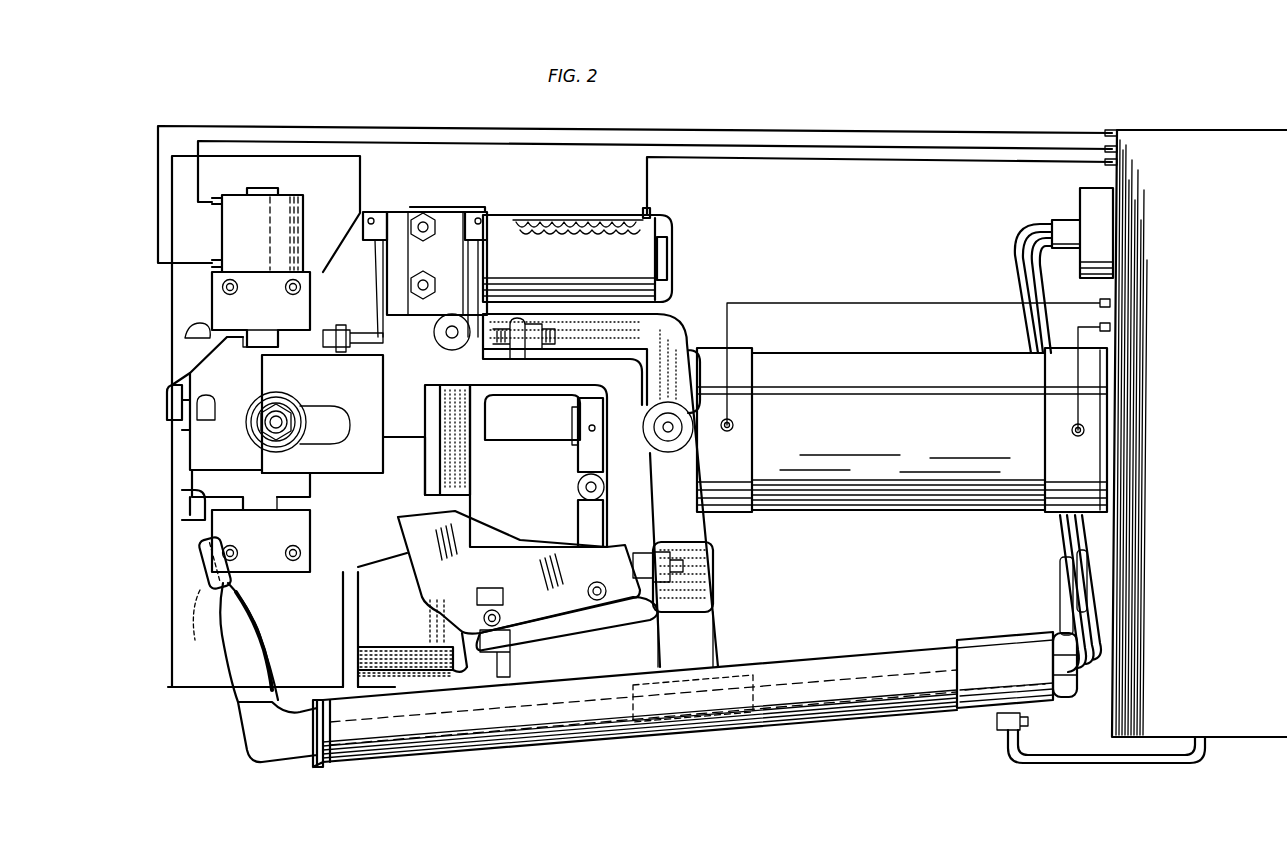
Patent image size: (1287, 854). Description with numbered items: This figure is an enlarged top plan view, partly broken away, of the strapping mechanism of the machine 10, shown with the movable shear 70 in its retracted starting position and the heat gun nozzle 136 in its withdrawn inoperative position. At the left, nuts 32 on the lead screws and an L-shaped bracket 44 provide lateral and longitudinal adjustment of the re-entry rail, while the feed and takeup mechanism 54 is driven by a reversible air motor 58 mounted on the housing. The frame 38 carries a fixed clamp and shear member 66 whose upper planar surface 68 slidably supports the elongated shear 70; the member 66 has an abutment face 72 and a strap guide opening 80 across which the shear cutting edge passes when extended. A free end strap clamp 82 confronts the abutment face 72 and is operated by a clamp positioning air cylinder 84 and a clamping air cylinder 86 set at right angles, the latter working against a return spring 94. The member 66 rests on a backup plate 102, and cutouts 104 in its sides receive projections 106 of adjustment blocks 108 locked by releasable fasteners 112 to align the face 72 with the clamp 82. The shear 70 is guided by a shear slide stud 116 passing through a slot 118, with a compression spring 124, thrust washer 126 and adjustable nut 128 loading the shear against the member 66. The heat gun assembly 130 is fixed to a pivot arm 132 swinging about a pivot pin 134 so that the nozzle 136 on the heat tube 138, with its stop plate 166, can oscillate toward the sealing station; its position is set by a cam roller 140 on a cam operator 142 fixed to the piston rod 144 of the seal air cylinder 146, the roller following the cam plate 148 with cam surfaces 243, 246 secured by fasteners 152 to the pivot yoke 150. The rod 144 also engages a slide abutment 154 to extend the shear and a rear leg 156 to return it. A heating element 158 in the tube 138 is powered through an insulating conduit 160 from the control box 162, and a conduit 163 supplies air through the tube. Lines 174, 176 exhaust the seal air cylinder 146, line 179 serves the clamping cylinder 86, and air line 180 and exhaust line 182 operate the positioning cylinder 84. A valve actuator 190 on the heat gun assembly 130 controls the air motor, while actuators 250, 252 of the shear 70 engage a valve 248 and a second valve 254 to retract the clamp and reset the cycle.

The machine 10 is at (130, 226).
The nuts 32 is at (188, 505).
The frame 38 is at (698, 300).
The L-shaped bracket 44 is at (186, 690).
The feed and takeup mechanism 54 is at (412, 643).
The reversible air motor 58 is at (388, 573).
The clamp and shear member 66 is at (308, 495).
The upper planar surface 68 is at (190, 378).
The shear 70 is at (343, 425).
The abutment face 72 is at (190, 440).
The strap guide opening 80 is at (215, 410).
The free end strap clamp 82 is at (158, 412).
The clamp positioning air cylinder 84 is at (257, 230).
The clamping air cylinder 86 is at (577, 258).
The return spring 94 is at (537, 214).
The backup plate 102 is at (185, 347).
The cutouts 104 is at (255, 343).
The projections 106 is at (245, 340).
The adjustment blocks 108 is at (261, 309).
The releasable fasteners 112 is at (301, 287).
The shear slide stud 116 is at (276, 416).
The slot 118 is at (343, 423).
The compression spring 124 is at (290, 440).
The thrust washer 126 is at (292, 410).
The adjustable nut 128 is at (285, 400).
The heat gun assembly 130 is at (838, 652).
The pivot arm 132 is at (683, 604).
The pivot pin 134 is at (660, 427).
The nozzle 136 is at (256, 675).
The heat tube 138 is at (635, 707).
The cam roller 140 is at (580, 480).
The cam operator 142 is at (585, 457).
The piston rod 144 is at (571, 414).
The seal air cylinder 146 is at (902, 430).
The cam plate 148 is at (519, 589).
The pivot yoke 150 is at (601, 645).
The fasteners 152 is at (507, 657).
The slide abutment 154 is at (433, 445).
The rear leg 156 is at (623, 435).
The heating element 158 is at (945, 626).
The insulating conduit 160 is at (1035, 289).
The control box 162 is at (1196, 433).
The conduit 163 is at (1080, 763).
The stop plate 166 is at (207, 548).
The line 174 is at (729, 326).
The line 176 is at (1079, 409).
The line 179 is at (647, 183).
The air line 180 is at (430, 150).
The line 182 is at (388, 124).
The valve actuator 190 is at (632, 567).
The cam surface 243 is at (560, 545).
The cam surface 246 is at (480, 538).
The valve 248 is at (452, 215).
The actuator 250 is at (510, 351).
The actuator 252 is at (380, 350).
The second valve 254 is at (384, 212).